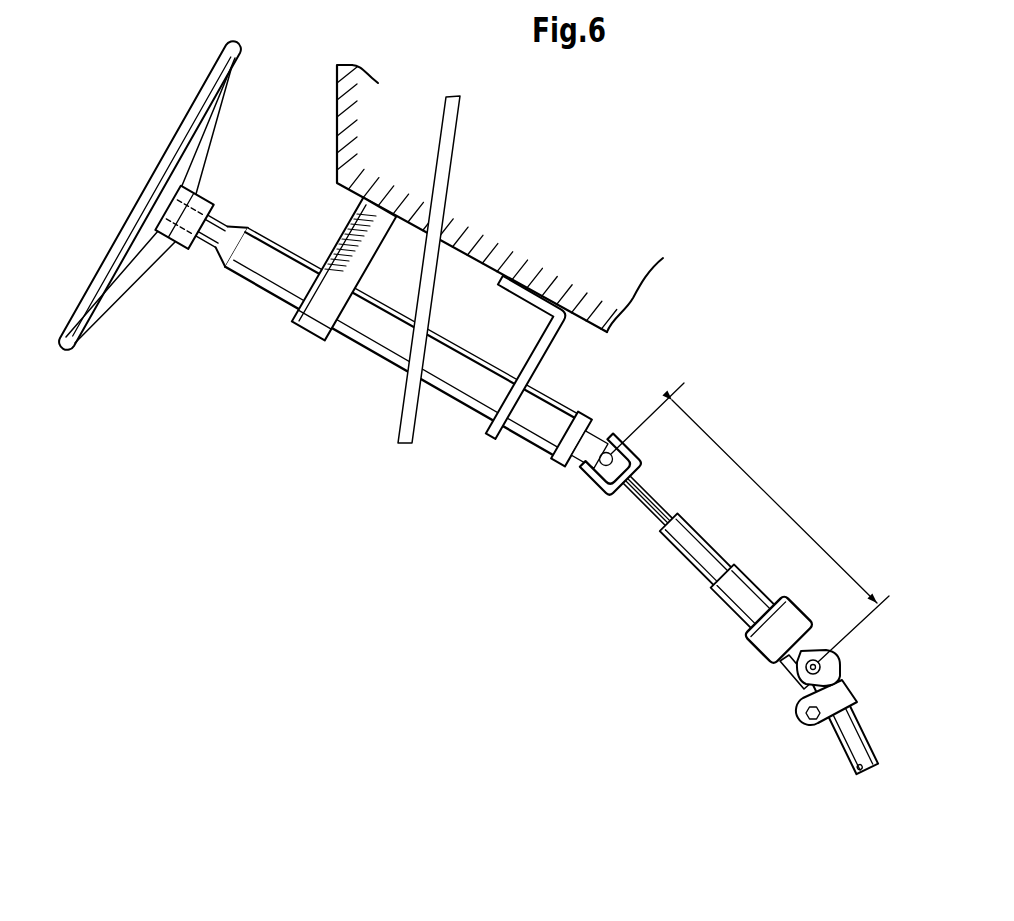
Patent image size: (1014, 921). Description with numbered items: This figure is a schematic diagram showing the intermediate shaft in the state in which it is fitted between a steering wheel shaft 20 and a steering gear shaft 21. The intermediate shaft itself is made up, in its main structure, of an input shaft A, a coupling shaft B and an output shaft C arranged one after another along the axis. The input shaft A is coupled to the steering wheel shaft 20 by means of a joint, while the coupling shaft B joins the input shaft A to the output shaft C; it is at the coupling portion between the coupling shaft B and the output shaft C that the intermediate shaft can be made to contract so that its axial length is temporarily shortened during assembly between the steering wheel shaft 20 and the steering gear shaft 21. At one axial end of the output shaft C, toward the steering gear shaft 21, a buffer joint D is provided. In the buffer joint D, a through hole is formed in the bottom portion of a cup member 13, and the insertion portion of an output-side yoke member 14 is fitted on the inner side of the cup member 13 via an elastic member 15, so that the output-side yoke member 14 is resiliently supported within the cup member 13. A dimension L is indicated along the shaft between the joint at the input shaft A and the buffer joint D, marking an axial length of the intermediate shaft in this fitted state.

The steering wheel shaft 20 is at (555, 399).
The cup member 13 is at (751, 659).
The output-side yoke member 14 is at (789, 686).
The elastic member 15 is at (815, 660).
The steering gear shaft 21 is at (871, 733).
The input shaft A is at (636, 516).
The coupling shaft B is at (682, 567).
The output shaft C is at (732, 617).
The buffer joint D is at (766, 668).
The length L is at (750, 522).